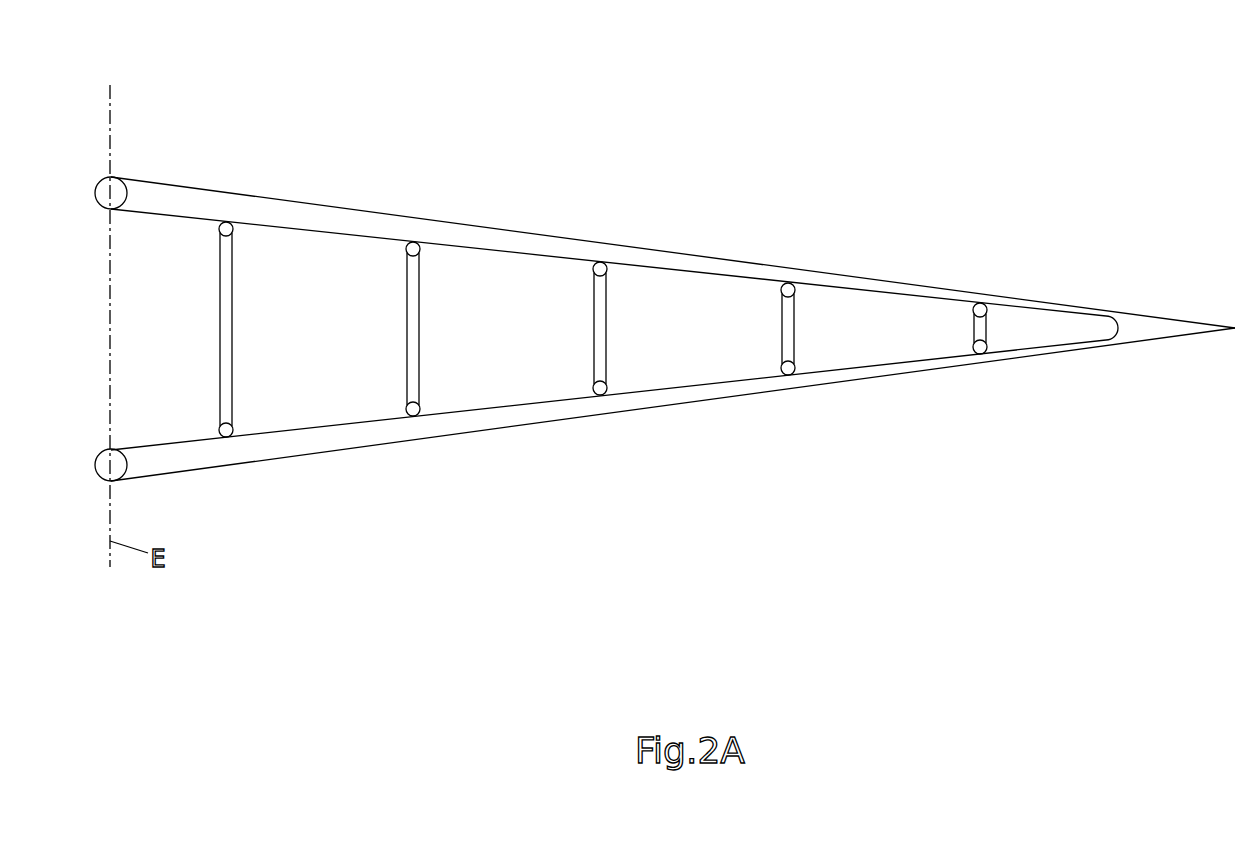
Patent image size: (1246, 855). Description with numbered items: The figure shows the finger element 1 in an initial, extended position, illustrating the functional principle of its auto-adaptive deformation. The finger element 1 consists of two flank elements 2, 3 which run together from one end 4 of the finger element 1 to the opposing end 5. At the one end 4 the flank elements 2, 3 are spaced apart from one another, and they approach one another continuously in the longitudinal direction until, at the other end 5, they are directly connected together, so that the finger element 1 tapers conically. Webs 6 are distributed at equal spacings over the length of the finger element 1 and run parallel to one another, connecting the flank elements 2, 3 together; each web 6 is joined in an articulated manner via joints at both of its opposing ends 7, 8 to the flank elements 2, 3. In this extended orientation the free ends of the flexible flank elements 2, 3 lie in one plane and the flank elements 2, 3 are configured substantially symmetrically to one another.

The finger element 1 is at (670, 273).
The flank element 2 is at (497, 235).
The flank element 3 is at (500, 427).
The end of the finger element 4 is at (132, 116).
The opposing end of the finger element 5 is at (1210, 254).
The web 6 is at (231, 321).
The end of the web 7 is at (219, 231).
The opposing end of the web 8 is at (219, 428).